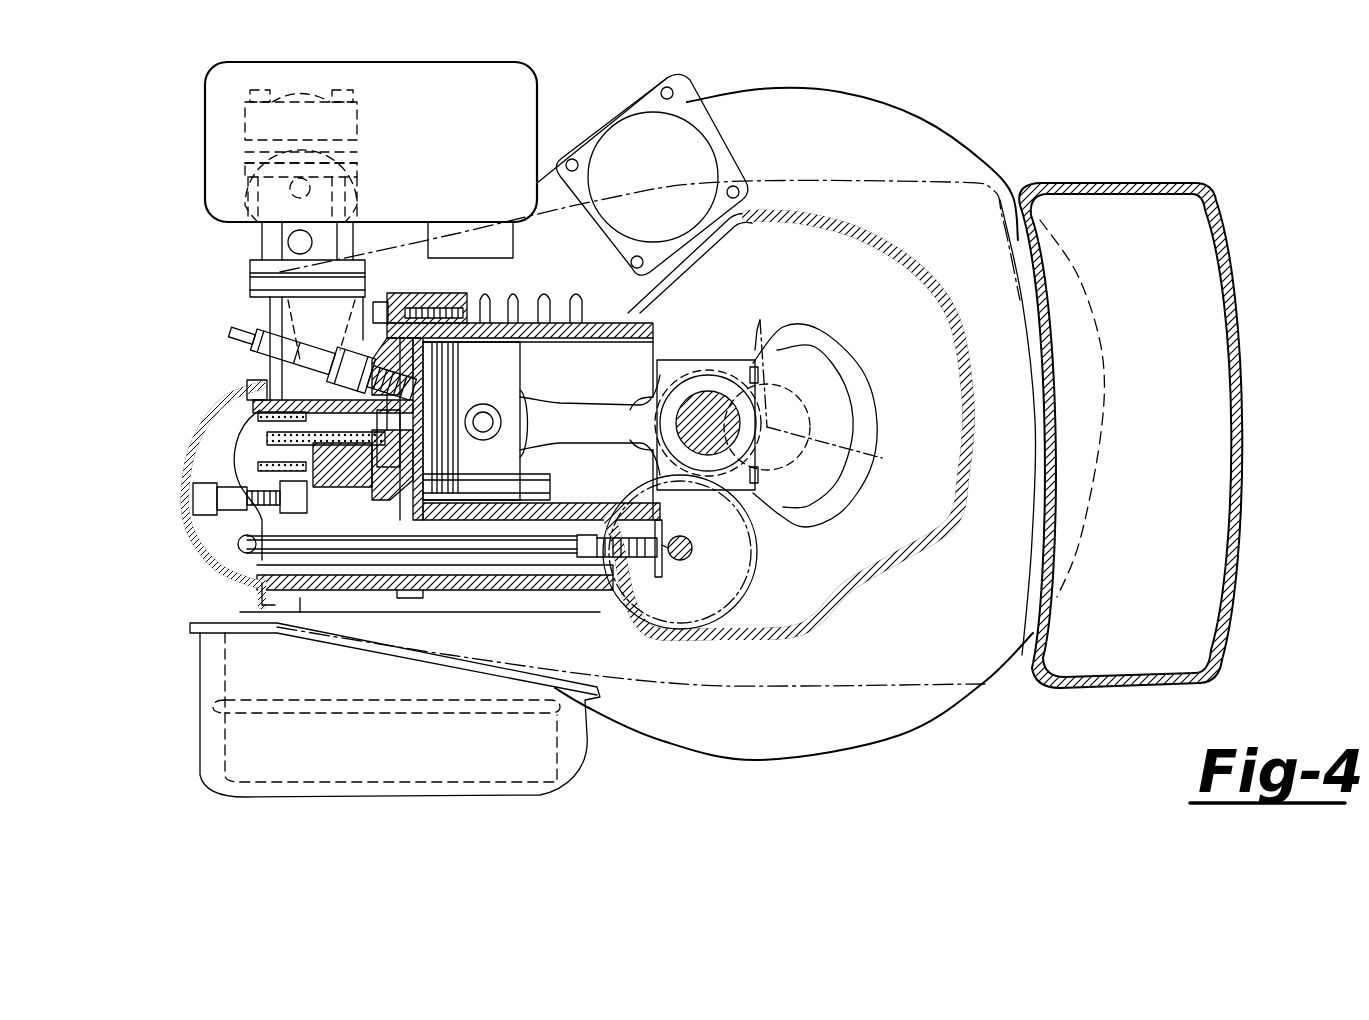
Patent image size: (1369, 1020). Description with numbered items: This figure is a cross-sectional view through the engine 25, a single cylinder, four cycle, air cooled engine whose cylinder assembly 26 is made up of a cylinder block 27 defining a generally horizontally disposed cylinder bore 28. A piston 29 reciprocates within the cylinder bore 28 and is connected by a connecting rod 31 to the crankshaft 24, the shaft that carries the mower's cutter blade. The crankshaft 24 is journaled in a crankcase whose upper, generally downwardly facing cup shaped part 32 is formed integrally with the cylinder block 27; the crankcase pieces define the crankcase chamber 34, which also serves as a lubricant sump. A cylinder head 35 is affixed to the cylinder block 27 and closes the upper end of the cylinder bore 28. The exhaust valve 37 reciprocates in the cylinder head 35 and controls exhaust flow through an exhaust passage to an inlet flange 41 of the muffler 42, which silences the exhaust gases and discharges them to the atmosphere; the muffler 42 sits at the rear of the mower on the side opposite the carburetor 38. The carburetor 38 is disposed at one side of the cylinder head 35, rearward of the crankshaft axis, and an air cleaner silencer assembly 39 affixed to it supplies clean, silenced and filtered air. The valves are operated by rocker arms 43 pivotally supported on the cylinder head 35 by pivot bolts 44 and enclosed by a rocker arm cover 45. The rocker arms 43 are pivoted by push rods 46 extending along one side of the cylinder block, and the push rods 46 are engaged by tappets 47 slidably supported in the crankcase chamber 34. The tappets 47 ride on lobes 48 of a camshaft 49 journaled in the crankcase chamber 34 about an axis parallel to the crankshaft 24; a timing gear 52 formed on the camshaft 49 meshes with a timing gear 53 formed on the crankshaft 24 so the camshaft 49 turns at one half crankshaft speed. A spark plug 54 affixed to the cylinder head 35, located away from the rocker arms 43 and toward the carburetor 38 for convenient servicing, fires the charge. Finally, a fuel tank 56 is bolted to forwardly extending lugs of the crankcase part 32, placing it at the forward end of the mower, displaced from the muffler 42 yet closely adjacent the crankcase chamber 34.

The crankshaft 24 is at (823, 423).
The engine 25 is at (843, 218).
The cylinder assembly 26 is at (205, 572).
The cylinder block 27 is at (540, 305).
The cylinder bore 28 is at (580, 340).
The piston 29 is at (535, 487).
The connecting rod 31 is at (550, 382).
The cup shaped part 32 is at (868, 253).
The crankcase chamber 34 is at (733, 311).
The cylinder head 35 is at (330, 400).
The exhaust valve 37 is at (248, 397).
The carburetor 38 is at (250, 232).
The air cleaner silencer assembly 39 is at (413, 70).
The inlet flange 41 is at (310, 600).
The muffler 42 is at (310, 790).
The rocker arms 43 is at (232, 462).
The pivot bolts 44 is at (193, 499).
The rocker arm cover 45 is at (190, 530).
The push rods 46 is at (505, 545).
The tappets 47 is at (625, 560).
The lobes 48 is at (690, 560).
The camshaft 49 is at (700, 548).
The timing gear 52 is at (785, 560).
The timing gear 53 is at (755, 350).
The spark plug 54 is at (247, 325).
The fuel tank 56 is at (1175, 190).